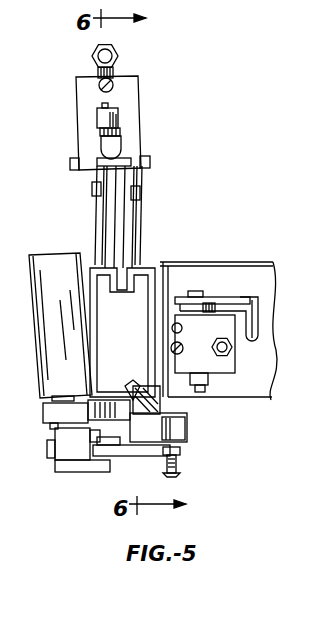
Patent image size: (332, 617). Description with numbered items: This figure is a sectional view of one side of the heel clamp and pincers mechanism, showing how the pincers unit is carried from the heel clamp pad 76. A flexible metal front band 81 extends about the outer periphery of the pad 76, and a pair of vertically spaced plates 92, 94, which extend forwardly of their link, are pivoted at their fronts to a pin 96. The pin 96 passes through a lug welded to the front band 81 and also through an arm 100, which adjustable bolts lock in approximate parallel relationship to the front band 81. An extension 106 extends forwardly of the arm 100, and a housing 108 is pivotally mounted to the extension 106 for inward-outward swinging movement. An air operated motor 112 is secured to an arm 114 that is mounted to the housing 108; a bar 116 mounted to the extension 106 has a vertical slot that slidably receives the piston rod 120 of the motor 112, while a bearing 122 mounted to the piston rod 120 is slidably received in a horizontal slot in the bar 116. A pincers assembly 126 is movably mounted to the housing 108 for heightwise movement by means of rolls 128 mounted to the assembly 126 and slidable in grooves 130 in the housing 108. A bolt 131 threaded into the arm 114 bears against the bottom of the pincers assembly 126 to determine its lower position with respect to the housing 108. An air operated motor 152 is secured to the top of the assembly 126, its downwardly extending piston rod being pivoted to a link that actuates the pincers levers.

The air operated motor 152 is at (141, 115).
The pincers assembly 126 is at (147, 262).
The air operated motor 112 is at (60, 266).
The housing 108 is at (134, 334).
The heel clamp pad 76 is at (210, 261).
The front band 81 is at (268, 289).
The plate 92 is at (222, 300).
The pin 96 is at (198, 291).
The arm 100 is at (220, 363).
The plate 94 is at (218, 318).
The groove 130 is at (146, 378).
The roll 128 is at (123, 390).
The bolt 131 is at (178, 423).
The extension 106 is at (155, 457).
The piston rod 120 is at (57, 425).
The arm 114 is at (90, 440).
The bearing 122 is at (52, 456).
The bar 116 is at (70, 458).